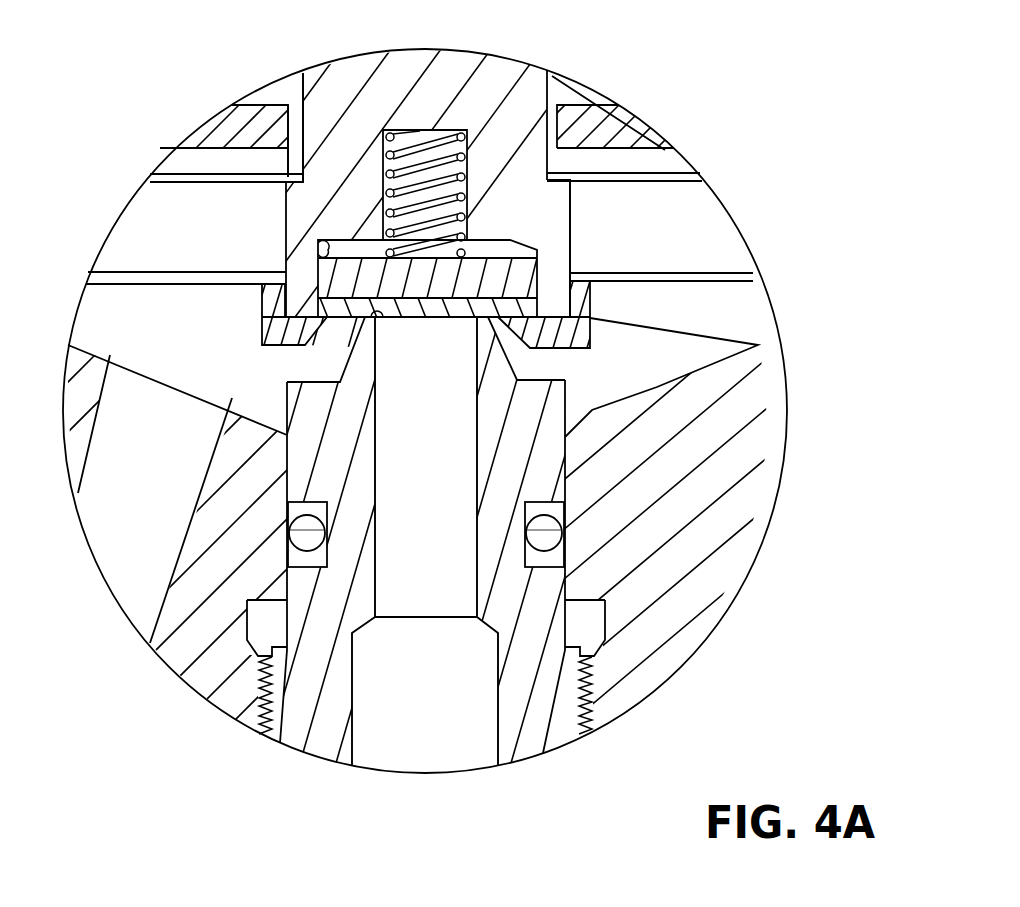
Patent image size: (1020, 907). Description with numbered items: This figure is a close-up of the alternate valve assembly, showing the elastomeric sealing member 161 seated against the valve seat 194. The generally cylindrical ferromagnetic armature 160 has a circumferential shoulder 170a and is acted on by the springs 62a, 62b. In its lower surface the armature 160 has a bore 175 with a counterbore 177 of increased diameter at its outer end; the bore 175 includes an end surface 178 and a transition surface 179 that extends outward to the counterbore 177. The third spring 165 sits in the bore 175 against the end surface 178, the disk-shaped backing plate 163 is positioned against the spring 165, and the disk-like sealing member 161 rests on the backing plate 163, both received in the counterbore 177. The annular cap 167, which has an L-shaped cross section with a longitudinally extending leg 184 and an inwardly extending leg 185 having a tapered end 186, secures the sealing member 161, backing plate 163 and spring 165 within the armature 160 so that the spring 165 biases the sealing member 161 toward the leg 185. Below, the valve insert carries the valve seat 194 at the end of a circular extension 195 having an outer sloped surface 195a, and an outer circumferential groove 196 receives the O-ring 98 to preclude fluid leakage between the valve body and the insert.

The armature 160 is at (500, 80).
The circumferential shoulder 170a is at (240, 105).
The spring 62a is at (172, 182).
The spring 62b is at (115, 275).
The bore 175 is at (370, 183).
The counterbore 177 is at (320, 240).
The end surface 178 is at (470, 158).
The third spring 165 is at (470, 218).
The transition surface 179 is at (572, 257).
The longitudinally extending leg 184 is at (590, 293).
The backing plate 163 is at (285, 286).
The cap 167 is at (590, 310).
The inwardly extending leg 185 is at (283, 345).
The tapered end 186 is at (520, 340).
The circular extension 195 is at (355, 358).
The outer sloped or tapered surface 195a is at (300, 374).
The sealing member 161 is at (441, 320).
The valve seat 194 is at (388, 318).
The outer circumferential groove 196 is at (540, 527).
The O-ring 98 is at (547, 538).